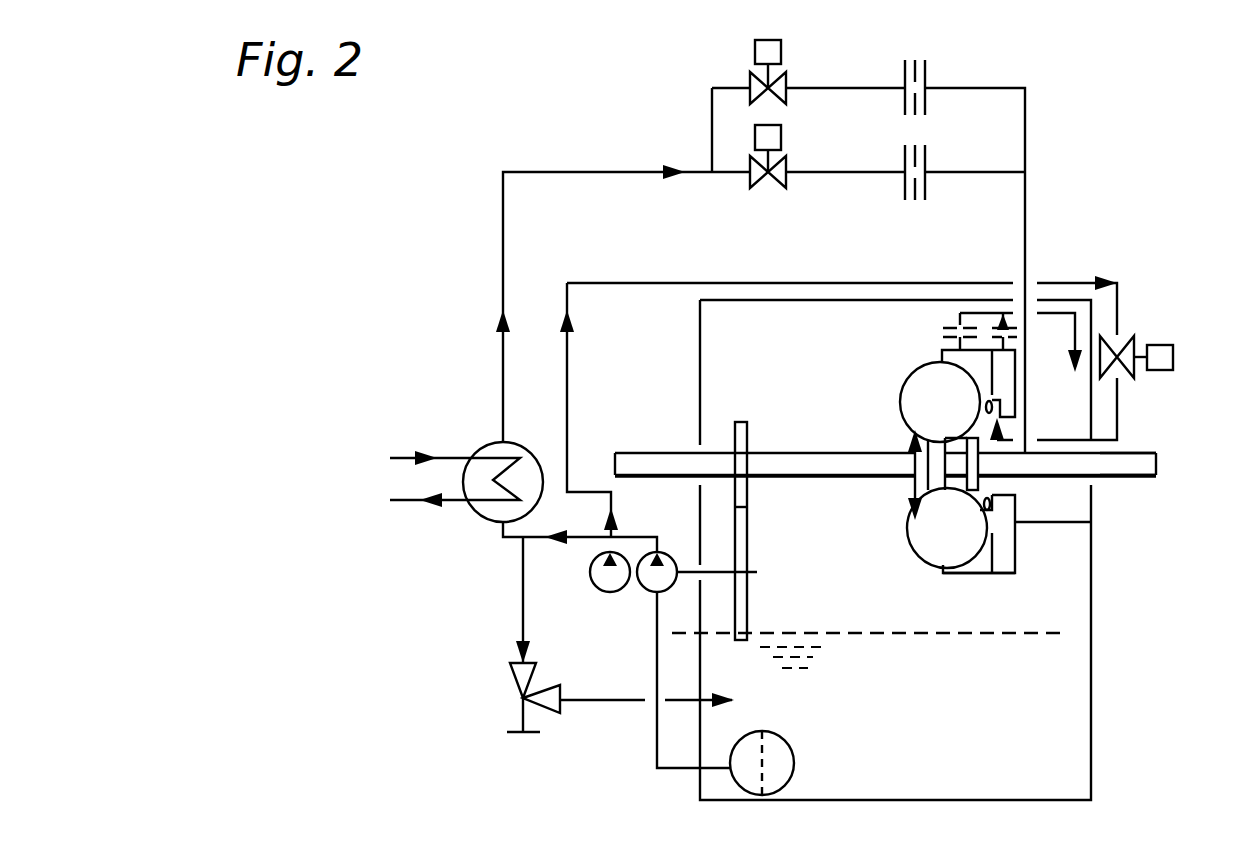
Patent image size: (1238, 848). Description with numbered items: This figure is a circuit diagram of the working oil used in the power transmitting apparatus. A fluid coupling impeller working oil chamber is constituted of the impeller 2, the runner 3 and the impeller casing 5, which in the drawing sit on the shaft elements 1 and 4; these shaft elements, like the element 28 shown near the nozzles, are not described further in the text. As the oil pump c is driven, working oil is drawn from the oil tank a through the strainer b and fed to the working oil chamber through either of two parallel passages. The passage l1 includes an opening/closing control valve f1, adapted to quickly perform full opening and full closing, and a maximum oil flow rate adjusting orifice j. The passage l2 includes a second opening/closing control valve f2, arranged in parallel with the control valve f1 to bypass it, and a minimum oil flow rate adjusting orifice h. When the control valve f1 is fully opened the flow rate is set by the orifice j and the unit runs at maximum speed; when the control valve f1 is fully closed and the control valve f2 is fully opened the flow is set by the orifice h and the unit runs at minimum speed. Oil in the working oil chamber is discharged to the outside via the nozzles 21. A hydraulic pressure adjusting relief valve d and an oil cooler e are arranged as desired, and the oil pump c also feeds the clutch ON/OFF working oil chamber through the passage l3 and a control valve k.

The shaft 1 is at (653, 456).
The impeller 2 is at (910, 380).
The runner 3 is at (986, 548).
The shaft 4 is at (1137, 460).
The impeller casing 5 is at (1002, 576).
The nozzles 21 is at (975, 320).
The orifice 28 is at (1011, 326).
The oil tank a is at (1072, 741).
The strainer b is at (790, 785).
The oil pump c is at (590, 583).
The hydraulic pressure adjusting relief valve d is at (512, 735).
The oil cooler e is at (485, 520).
The opening/closing control valve f1 is at (750, 85).
The opening/closing control valve f2 is at (750, 160).
The minimum oil flow rate adjusting orifice h is at (904, 190).
The maximum oil flow rate adjusting orifice j is at (927, 66).
The control valve k is at (1134, 343).
The passage l1 is at (834, 88).
The passage l2 is at (836, 171).
The passage l3 is at (926, 282).